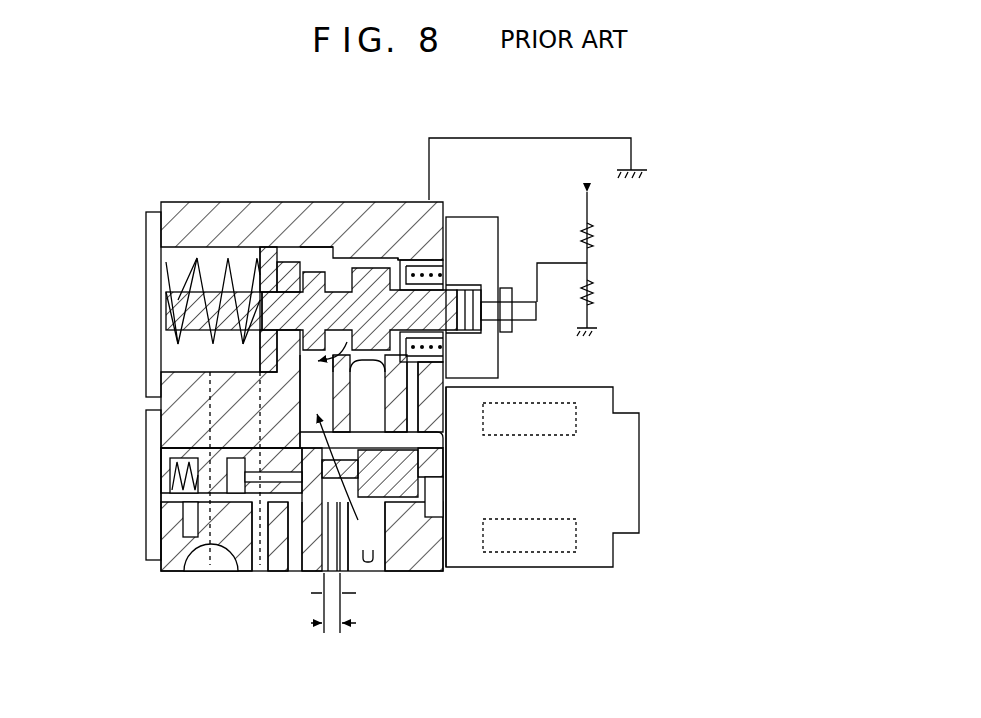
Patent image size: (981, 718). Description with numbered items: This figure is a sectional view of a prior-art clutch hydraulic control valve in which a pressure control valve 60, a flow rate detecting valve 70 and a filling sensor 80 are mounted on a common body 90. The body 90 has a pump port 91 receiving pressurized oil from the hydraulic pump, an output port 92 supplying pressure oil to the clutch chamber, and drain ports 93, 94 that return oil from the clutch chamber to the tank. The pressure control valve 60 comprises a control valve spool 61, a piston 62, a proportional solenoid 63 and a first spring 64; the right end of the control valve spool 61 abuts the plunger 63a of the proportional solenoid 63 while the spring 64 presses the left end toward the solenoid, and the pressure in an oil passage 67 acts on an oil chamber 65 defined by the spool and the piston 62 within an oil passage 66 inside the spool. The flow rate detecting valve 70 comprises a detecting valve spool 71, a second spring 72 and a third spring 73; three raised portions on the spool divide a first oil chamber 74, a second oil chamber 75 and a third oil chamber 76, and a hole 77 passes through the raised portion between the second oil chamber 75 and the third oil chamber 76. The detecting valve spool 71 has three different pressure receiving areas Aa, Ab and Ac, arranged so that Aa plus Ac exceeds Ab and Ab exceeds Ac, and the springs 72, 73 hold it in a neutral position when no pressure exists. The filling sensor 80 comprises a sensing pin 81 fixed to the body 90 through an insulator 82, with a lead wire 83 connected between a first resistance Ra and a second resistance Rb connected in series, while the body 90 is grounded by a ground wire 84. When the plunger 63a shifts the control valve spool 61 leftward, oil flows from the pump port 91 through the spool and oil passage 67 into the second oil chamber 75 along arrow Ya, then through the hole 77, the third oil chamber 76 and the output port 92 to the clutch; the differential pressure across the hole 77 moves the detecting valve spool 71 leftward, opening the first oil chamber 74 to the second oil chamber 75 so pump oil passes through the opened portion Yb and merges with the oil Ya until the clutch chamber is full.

The pressure control valve 60 is at (122, 482).
The pressure control valve spool 61 is at (425, 500).
The piston 62 is at (152, 562).
The proportional solenoid 63 is at (592, 567).
The plunger 63a is at (444, 478).
The first spring 64 is at (165, 482).
The oil chamber 65 is at (250, 573).
The oil passage 66 is at (292, 575).
The oil passage 67 is at (310, 573).
The flow rate detecting valve 70 is at (122, 305).
The flow rate detecting valve spool 71 is at (166, 325).
The second spring 72 is at (163, 267).
The third spring 73 is at (455, 217).
The first oil chamber 74 is at (365, 268).
The second oil chamber 75 is at (298, 262).
The third oil chamber 76 is at (184, 262).
The hole 77 is at (264, 262).
The filling sensor 80 is at (614, 272).
The sensing pin 81 is at (528, 300).
The insulator 82 is at (492, 283).
The lead wire 83 is at (555, 265).
The ground wire 84 is at (633, 152).
The body 90 is at (161, 203).
The pump port 91 is at (378, 573).
The output port 92 is at (197, 573).
The drain port 93 is at (263, 573).
The drain port 94 is at (413, 573).
The pressure receiving area Aa is at (237, 290).
The pressure receiving area Ab is at (272, 262).
The pressure receiving area Ac is at (332, 258).
The first resistance Ra is at (598, 240).
The second resistance Rb is at (598, 298).
The oil flow arrow Ya is at (329, 437).
The opened portion Yb is at (384, 396).